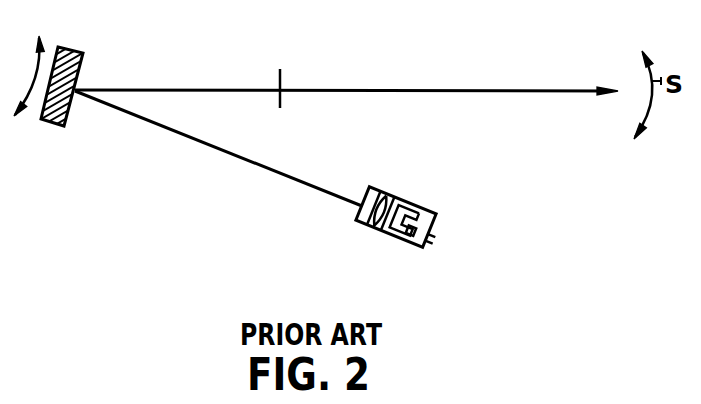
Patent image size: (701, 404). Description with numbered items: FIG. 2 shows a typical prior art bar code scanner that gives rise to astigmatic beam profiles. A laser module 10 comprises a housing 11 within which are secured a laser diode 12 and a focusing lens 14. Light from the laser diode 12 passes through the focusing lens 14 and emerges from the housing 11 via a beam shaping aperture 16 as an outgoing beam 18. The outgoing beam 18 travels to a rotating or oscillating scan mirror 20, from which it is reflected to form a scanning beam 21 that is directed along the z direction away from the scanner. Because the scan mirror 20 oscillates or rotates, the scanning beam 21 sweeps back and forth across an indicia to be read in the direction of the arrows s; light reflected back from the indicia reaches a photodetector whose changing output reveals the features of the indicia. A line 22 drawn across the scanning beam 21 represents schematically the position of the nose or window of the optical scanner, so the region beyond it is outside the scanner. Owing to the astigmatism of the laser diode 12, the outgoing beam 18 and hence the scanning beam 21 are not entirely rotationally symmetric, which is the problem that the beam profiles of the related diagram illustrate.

The laser module 10 is at (390, 221).
The housing 11 is at (425, 207).
The laser diode 12 is at (400, 246).
The focusing lens 14 is at (405, 205).
The beam shaping aperture 16 is at (368, 200).
The outgoing beam 18 is at (203, 142).
The scan mirror 20 is at (66, 124).
The scanning beam 21 is at (485, 90).
The line representing the nose or window of the scanner 22 is at (283, 84).